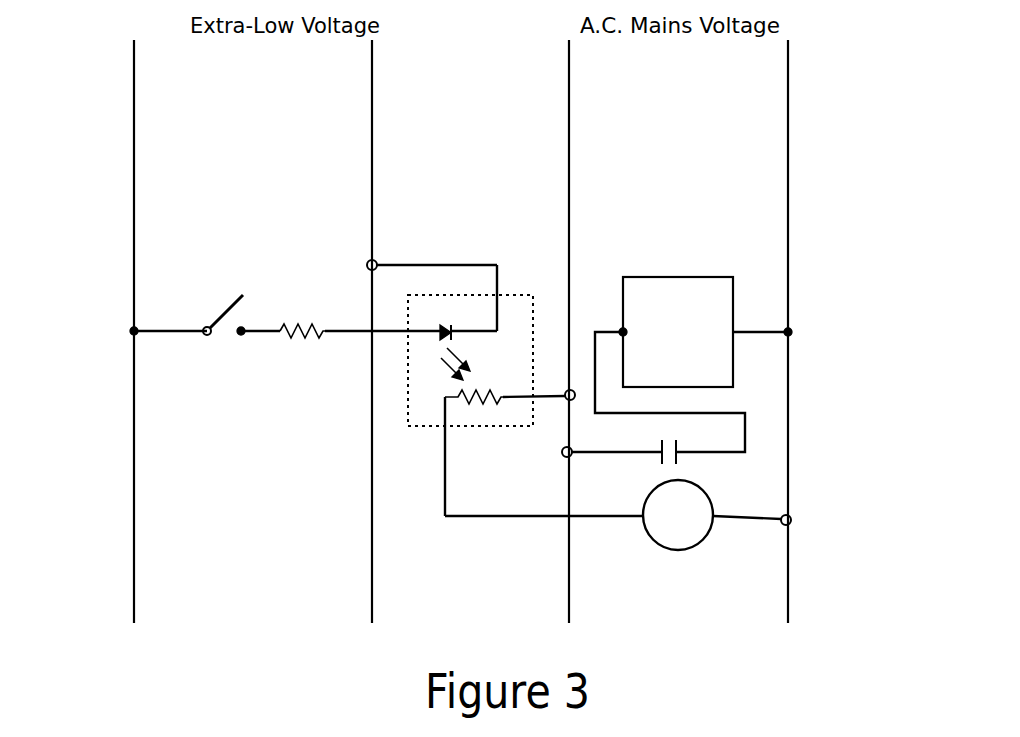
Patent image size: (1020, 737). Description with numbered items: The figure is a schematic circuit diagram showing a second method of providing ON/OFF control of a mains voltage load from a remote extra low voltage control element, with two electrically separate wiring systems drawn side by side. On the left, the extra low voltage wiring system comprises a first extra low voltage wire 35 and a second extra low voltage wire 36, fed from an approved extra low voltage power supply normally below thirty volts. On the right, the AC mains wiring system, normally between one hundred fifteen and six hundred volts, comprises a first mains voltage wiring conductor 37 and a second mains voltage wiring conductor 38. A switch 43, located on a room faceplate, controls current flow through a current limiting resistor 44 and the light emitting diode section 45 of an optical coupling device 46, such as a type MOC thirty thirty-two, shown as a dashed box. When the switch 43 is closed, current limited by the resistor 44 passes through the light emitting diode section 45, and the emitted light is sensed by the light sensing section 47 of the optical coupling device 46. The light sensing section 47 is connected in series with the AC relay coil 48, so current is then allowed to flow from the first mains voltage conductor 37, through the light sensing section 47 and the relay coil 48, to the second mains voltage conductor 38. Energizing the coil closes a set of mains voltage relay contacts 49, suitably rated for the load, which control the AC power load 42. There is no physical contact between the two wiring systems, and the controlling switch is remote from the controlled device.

The first extra low voltage wire 35 is at (130, 65).
The second extra low voltage wire 36 is at (354, 177).
The first mains voltage wiring conductor 37 is at (573, 105).
The second mains voltage wiring conductor 38 is at (792, 165).
The AC power load 42 is at (708, 272).
The switch 43 is at (215, 298).
The current limiting resistor 44 is at (298, 308).
The light emitting diode section 45 is at (443, 320).
The optical coupling device 46 is at (420, 412).
The light sensing section 47 is at (498, 380).
The AC relay coil 48 is at (700, 513).
The mains voltage relay contacts 49 is at (692, 462).